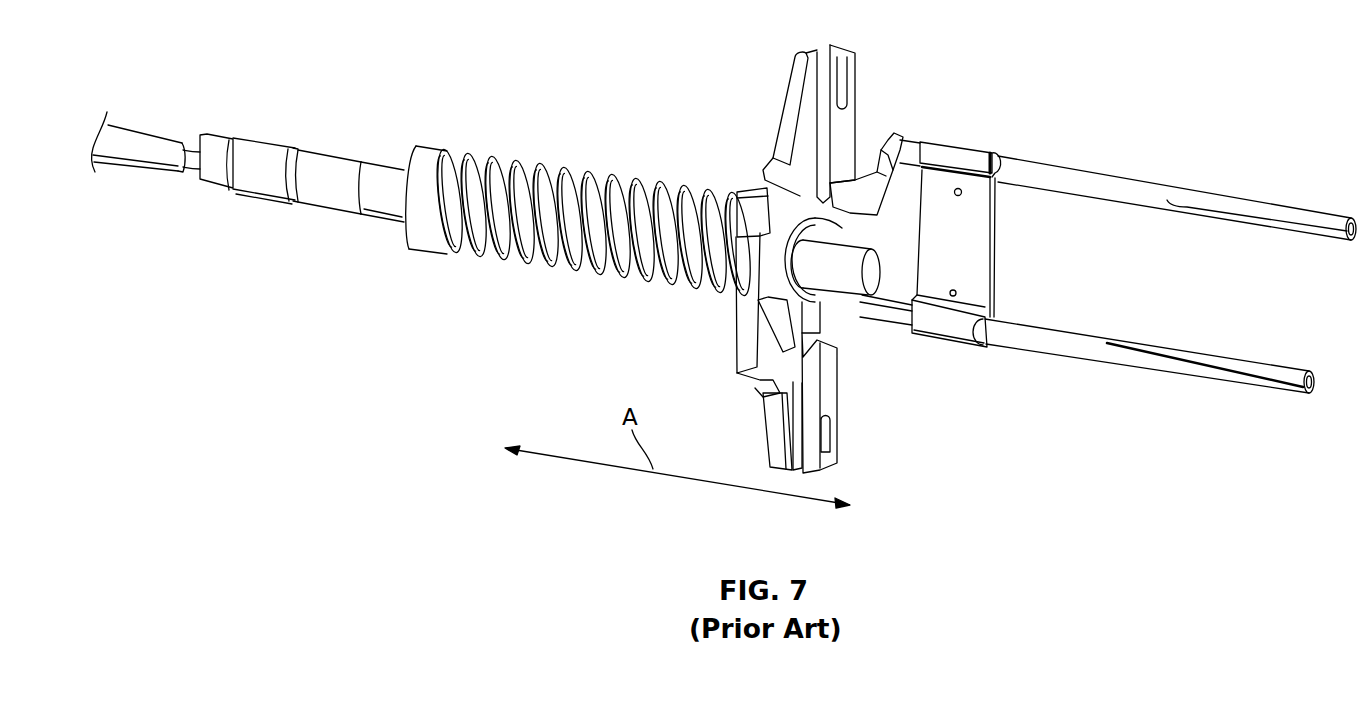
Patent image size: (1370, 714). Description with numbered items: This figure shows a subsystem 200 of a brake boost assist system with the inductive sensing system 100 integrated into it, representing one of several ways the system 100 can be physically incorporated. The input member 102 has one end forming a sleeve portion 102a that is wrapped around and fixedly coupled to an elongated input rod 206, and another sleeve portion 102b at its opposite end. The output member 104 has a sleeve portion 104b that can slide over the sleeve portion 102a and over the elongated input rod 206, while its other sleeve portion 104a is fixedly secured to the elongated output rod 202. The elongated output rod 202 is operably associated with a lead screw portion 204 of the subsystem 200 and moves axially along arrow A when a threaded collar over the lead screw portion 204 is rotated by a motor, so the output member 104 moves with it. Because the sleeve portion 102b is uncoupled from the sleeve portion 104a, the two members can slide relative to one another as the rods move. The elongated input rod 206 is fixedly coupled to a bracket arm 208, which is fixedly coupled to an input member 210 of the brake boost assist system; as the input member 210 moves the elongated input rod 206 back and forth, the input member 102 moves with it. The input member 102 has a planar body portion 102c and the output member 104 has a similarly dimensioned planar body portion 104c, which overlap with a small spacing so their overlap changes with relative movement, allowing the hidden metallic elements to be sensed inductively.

The system 100 is at (968, 125).
The input member 102 is at (970, 245).
The sleeve portion 102a is at (990, 182).
The sleeve portion 102b is at (947, 322).
The planar body portion 102c is at (947, 237).
The output member 104 is at (1000, 245).
The sleeve portion 104a is at (988, 315).
The sleeve portion 104b is at (940, 150).
The planar body portion 104c is at (989, 282).
The subsystem 200 is at (433, 105).
The elongated output rod 202 is at (1072, 348).
The lead screw portion 204 is at (547, 168).
The elongated input rod 206 is at (1088, 185).
The bracket arm 208 is at (775, 180).
The input member 210 is at (832, 264).